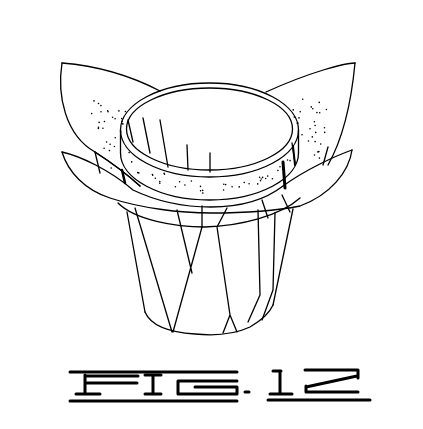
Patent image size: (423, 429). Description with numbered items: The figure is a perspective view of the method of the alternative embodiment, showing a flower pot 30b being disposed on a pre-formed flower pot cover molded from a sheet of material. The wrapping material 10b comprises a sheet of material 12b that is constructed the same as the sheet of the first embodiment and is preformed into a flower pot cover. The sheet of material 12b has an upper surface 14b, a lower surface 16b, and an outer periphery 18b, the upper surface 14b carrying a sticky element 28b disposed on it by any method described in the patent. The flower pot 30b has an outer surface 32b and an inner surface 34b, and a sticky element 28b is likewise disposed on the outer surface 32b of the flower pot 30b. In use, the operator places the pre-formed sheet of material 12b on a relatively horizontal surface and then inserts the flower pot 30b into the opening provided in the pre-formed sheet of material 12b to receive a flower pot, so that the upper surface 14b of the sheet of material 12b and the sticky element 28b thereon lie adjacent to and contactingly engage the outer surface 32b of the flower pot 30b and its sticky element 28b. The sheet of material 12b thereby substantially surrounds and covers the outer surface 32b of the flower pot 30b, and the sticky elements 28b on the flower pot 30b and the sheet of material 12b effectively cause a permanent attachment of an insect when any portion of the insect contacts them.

The wrapping material 10b is at (222, 72).
The sheet of material 12b is at (313, 67).
The upper surface 14b is at (338, 105).
The lower surface 16b is at (247, 297).
The outer periphery 18b is at (108, 70).
The sticky element 28b is at (308, 142).
The flower pot 30b is at (293, 193).
The outer surface 32b is at (290, 214).
The inner surface 34b is at (201, 105).